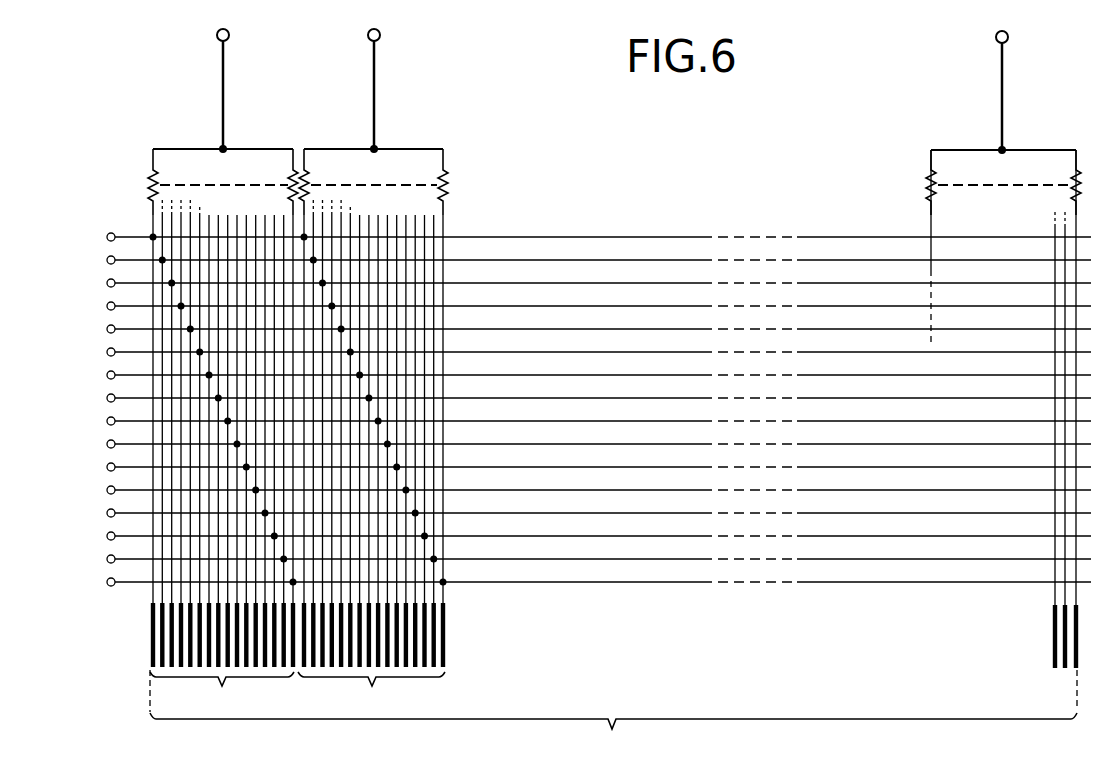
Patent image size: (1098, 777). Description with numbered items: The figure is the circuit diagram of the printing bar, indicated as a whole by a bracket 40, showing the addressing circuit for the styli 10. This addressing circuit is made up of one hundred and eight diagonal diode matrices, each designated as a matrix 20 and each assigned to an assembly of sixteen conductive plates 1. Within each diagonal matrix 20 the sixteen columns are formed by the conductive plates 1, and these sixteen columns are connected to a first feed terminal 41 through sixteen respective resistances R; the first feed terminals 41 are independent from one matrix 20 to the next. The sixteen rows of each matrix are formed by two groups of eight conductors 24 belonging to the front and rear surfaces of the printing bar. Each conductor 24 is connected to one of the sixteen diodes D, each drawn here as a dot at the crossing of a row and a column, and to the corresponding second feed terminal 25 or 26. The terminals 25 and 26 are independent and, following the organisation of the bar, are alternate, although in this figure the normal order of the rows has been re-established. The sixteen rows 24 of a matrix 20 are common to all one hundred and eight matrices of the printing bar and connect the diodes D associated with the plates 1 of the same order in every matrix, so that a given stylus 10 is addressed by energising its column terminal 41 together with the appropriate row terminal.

The first feed terminal 41 is at (231, 37).
The resistance R is at (152, 186).
The diode D is at (153, 237).
The second feed terminal 25 is at (107, 237).
The second feed terminal 26 is at (107, 260).
The conductive plate 1 is at (150, 298).
The conductor 24 is at (144, 377).
The stylus 10 is at (150, 632).
The diagonal diode matrix 20 is at (297, 693).
The printing bar 40 is at (613, 714).